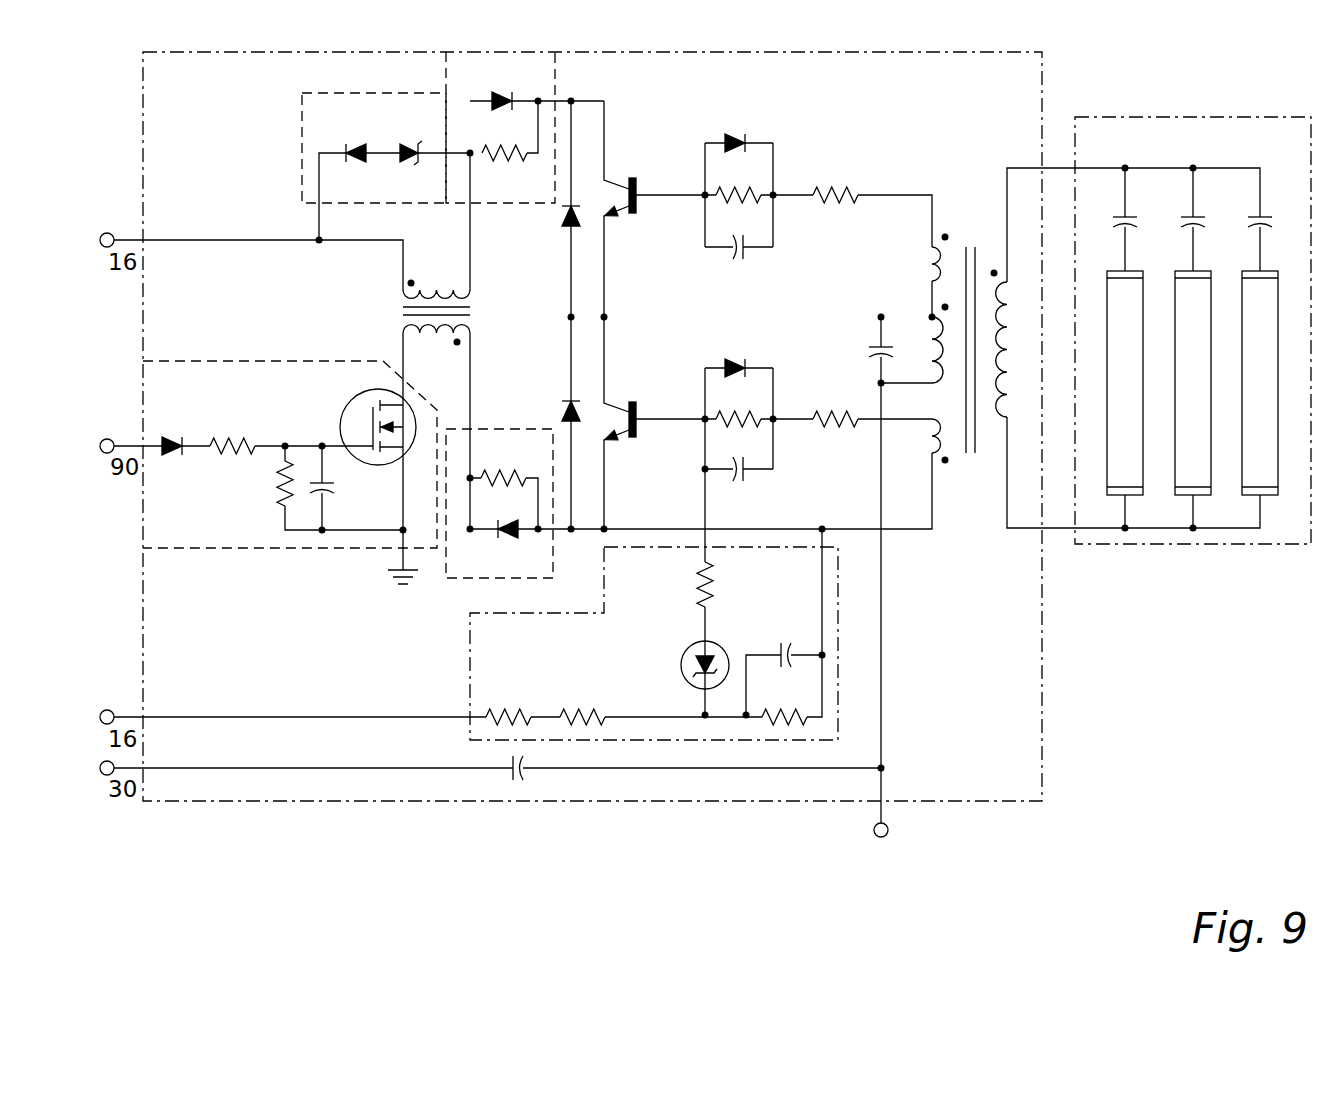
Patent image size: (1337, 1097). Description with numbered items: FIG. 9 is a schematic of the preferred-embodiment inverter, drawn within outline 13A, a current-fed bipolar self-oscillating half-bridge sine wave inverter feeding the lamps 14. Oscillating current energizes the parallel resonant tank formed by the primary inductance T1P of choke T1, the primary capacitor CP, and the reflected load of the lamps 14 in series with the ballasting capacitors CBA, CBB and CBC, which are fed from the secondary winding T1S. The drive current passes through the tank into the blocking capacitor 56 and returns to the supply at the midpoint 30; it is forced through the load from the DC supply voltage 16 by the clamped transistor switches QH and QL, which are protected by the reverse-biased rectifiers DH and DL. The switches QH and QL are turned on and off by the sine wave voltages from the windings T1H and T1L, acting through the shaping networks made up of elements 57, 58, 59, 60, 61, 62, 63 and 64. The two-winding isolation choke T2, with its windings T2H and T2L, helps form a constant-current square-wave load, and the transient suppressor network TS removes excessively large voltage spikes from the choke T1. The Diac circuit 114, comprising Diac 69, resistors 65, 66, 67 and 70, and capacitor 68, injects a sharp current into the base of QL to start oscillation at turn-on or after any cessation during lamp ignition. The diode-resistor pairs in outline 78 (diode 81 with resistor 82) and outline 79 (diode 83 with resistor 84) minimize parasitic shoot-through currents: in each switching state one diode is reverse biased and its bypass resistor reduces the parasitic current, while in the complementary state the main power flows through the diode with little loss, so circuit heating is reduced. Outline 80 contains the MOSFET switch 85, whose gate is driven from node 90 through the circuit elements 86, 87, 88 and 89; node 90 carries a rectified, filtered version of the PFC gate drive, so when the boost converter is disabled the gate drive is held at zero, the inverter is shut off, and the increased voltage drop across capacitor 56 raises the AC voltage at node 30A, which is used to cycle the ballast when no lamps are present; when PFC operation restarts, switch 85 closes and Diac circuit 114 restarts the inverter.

The ballast inverter circuit 13A is at (724, 76).
The lamps 14 is at (1193, 330).
The DC supply voltage 16 is at (107, 478).
The midpoint 30 is at (107, 768).
The node 30A is at (907, 830).
The blocking capacitor 56 is at (539, 775).
The shaping network element 57 is at (739, 158).
The shaping network element 58 is at (738, 210).
The shaping network element 59 is at (739, 259).
The shaping network element 60 is at (738, 382).
The shaping network element 61 is at (738, 434).
The shaping network element 62 is at (738, 482).
The shaping network element 63 is at (835, 209).
The shaping network element 64 is at (835, 433).
The resistor 65 is at (508, 700).
The resistor 66 is at (582, 700).
The resistor 67 is at (784, 703).
The capacitor 68 is at (781, 641).
The Diac 69 is at (686, 665).
The resistor 70 is at (689, 584).
The outline 78 is at (518, 78).
The outline 79 is at (518, 455).
The outline 80 is at (186, 388).
The diode 81 is at (505, 116).
The resistor 82 is at (504, 167).
The diode 83 is at (504, 545).
The resistor 84 is at (503, 492).
The MOSFET switch 85 is at (367, 418).
The resistor 86 is at (269, 493).
The capacitor 87 is at (336, 504).
The resistor 88 is at (232, 430).
The diode 89 is at (172, 431).
The gate drive node 90 is at (107, 446).
The Diac circuit 114 is at (522, 640).
The transient suppressor network TS is at (397, 120).
The transistor switch QH is at (627, 209).
The transistor switch QL is at (625, 423).
The rectifier DH is at (553, 224).
The rectifier DL is at (553, 404).
The choke T1 is at (965, 336).
The winding T1H is at (915, 264).
The primary inductance T1P is at (923, 350).
The winding T1L is at (922, 436).
The winding T1S is at (1018, 349).
The two winding isolation choke T2 is at (458, 313).
The transformer winding T2H is at (436, 273).
The transformer winding T2L is at (436, 351).
The primary capacitor CP is at (867, 367).
The ballasting capacitor CBA is at (1111, 342).
The ballasting capacitor CBB is at (1175, 342).
The ballasting capacitor CBC is at (1243, 342).